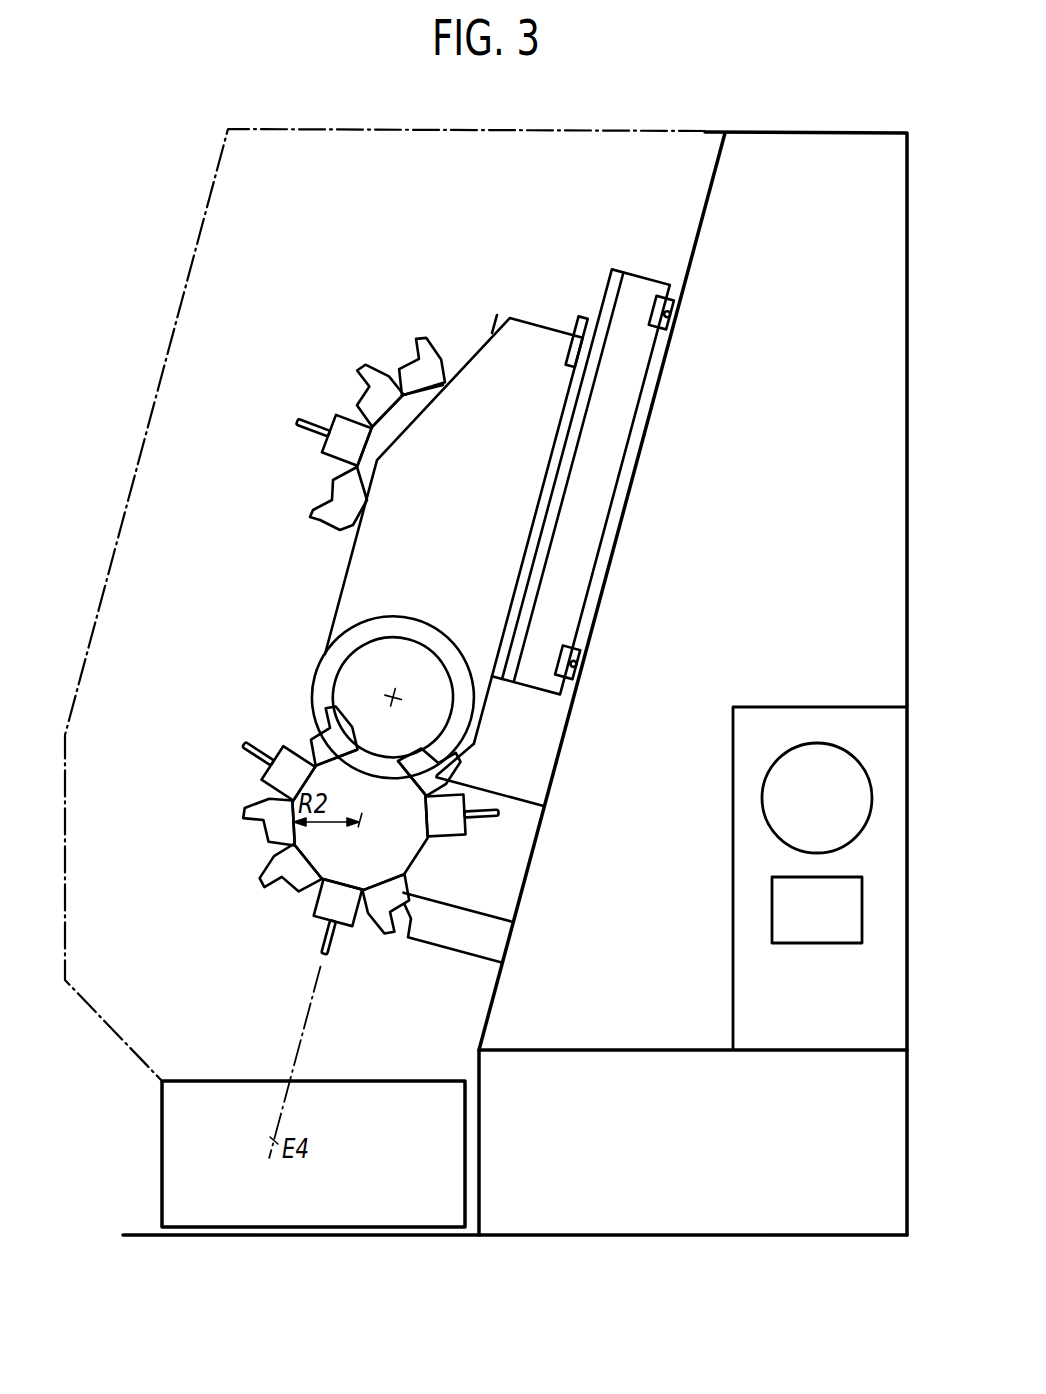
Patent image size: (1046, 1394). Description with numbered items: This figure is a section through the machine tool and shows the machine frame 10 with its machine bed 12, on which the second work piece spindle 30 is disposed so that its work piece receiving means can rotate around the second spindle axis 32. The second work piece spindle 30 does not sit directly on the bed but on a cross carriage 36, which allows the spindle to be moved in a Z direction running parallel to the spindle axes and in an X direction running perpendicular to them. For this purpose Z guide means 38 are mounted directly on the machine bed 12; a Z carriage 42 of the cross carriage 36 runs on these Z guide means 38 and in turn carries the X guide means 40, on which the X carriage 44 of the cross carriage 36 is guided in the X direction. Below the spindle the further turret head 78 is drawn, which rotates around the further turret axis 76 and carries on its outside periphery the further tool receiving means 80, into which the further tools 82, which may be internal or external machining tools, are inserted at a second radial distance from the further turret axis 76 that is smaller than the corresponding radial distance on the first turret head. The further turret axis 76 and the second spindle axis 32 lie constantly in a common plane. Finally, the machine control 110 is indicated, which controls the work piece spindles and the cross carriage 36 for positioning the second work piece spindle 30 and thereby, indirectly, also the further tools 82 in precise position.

The machine frame 10 is at (454, 547).
The machine bed 12 is at (838, 366).
The second work piece spindle 30 is at (484, 700).
The second spindle axis 32 is at (390, 696).
The cross carriage 36 is at (476, 400).
The Z guide means 38 is at (670, 313).
The X guide means 40 is at (608, 300).
The Z carriage 42 is at (582, 528).
The X carriage 44 is at (413, 550).
The further turret axis 76 is at (361, 826).
The further turret head 78 is at (313, 901).
The further tool receiving means 80 is at (280, 871).
The further tools 82 is at (468, 829).
The machine control 110 is at (839, 1011).